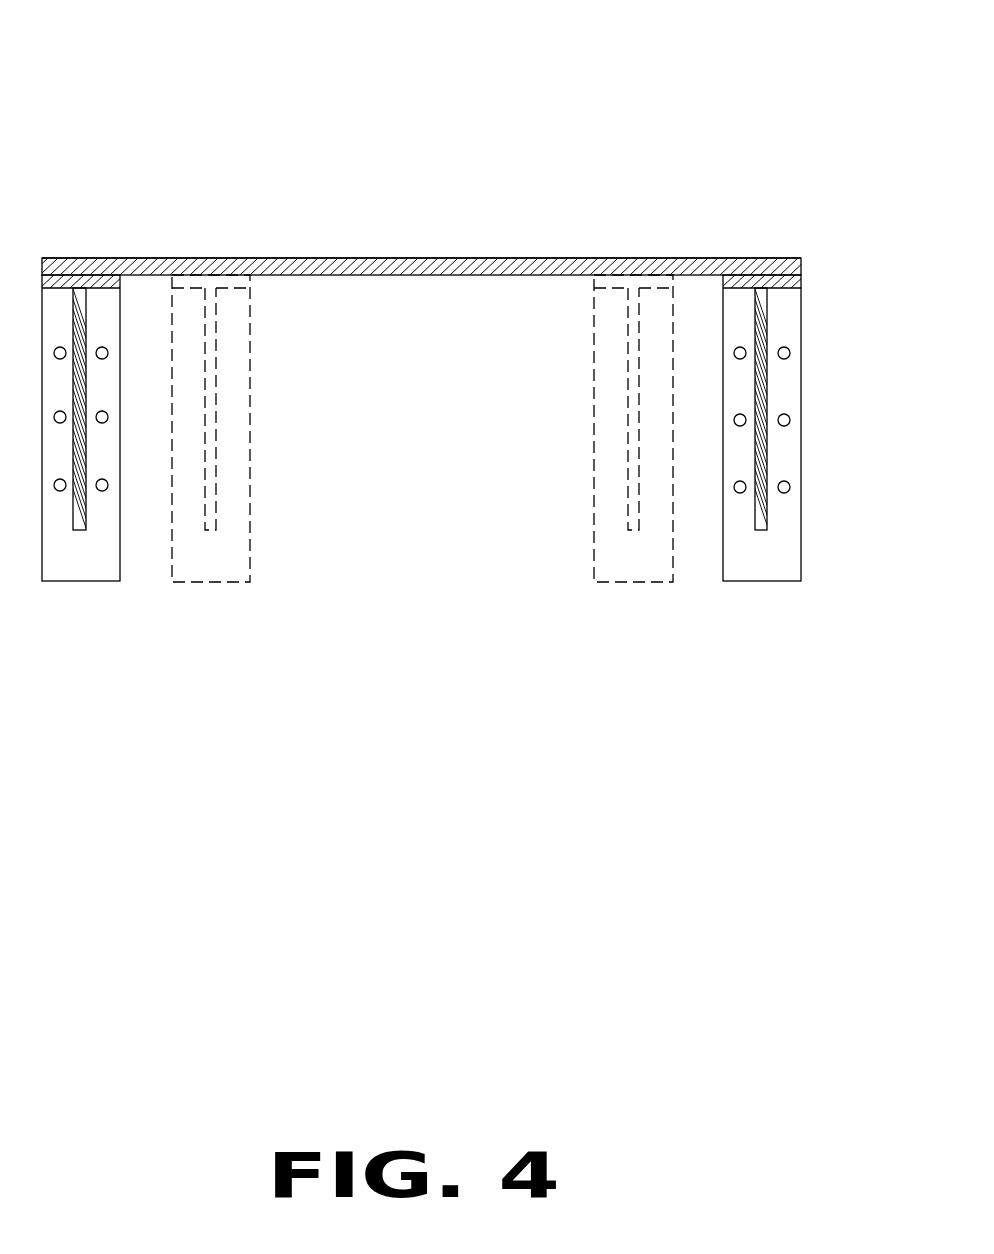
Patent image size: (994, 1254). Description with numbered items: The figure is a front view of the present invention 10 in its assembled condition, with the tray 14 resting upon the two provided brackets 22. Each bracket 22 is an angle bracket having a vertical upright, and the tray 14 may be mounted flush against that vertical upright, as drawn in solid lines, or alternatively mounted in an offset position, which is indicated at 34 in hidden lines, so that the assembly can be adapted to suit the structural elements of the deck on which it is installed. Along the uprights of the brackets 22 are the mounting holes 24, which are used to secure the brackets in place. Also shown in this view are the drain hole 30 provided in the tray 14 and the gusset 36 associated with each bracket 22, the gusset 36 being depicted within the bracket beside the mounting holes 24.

The present invention 10 is at (766, 198).
The tray 14 is at (200, 258).
The drain hole 30 is at (426, 258).
The brackets 22 is at (98, 582).
The gusset 36 is at (84, 517).
The mounting holes 24 is at (778, 420).
The offset mounting position 34 is at (220, 567).